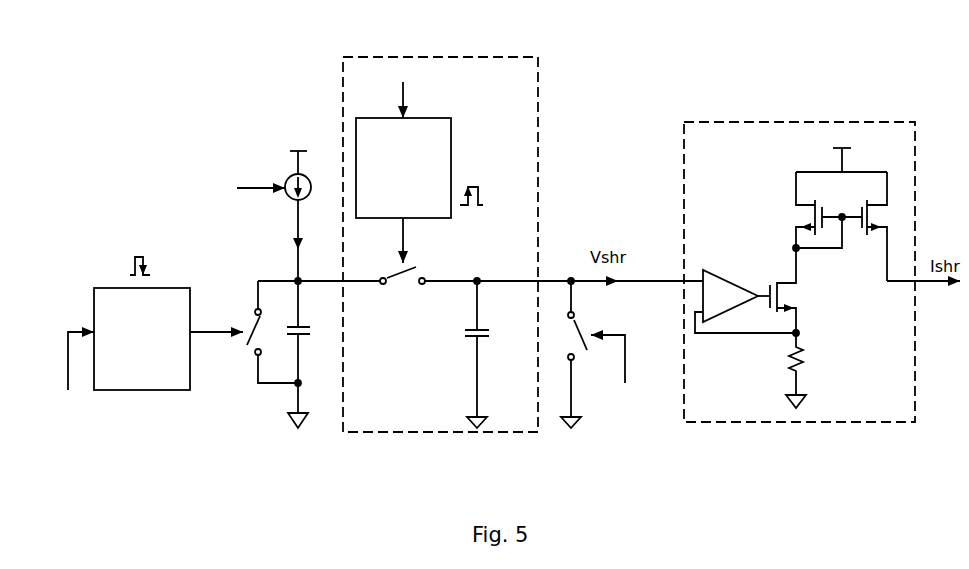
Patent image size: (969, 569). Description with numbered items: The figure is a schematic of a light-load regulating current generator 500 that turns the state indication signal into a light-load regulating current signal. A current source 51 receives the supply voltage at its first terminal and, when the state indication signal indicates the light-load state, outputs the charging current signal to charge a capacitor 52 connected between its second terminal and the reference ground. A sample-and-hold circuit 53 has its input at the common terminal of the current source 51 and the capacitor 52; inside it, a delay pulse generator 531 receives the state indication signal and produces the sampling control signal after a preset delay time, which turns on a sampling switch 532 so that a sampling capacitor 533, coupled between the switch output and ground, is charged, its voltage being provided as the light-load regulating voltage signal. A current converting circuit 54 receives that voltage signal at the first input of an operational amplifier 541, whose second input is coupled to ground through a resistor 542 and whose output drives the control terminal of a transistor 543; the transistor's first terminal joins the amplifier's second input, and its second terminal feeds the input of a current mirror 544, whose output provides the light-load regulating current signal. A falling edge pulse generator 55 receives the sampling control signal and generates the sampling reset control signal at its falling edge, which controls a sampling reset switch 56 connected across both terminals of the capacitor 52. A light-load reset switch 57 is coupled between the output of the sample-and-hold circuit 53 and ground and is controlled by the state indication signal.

The light-load regulating current generator 500 is at (624, 47).
The current source 51 is at (286, 178).
The capacitor 52 is at (303, 319).
The sample-and-hold circuit 53 is at (538, 140).
The delay pulse generator 531 is at (451, 164).
The sampling switch 532 is at (405, 284).
The sampling capacitor 533 is at (470, 344).
The current converting circuit 54 is at (914, 133).
The operational amplifier 541 is at (737, 269).
The resistor 542 is at (820, 353).
The transistor 543 is at (815, 291).
The current mirror 544 is at (791, 206).
The falling edge pulse generator 55 is at (190, 304).
The sampling reset switch 56 is at (253, 326).
The light-load reset switch 57 is at (582, 343).